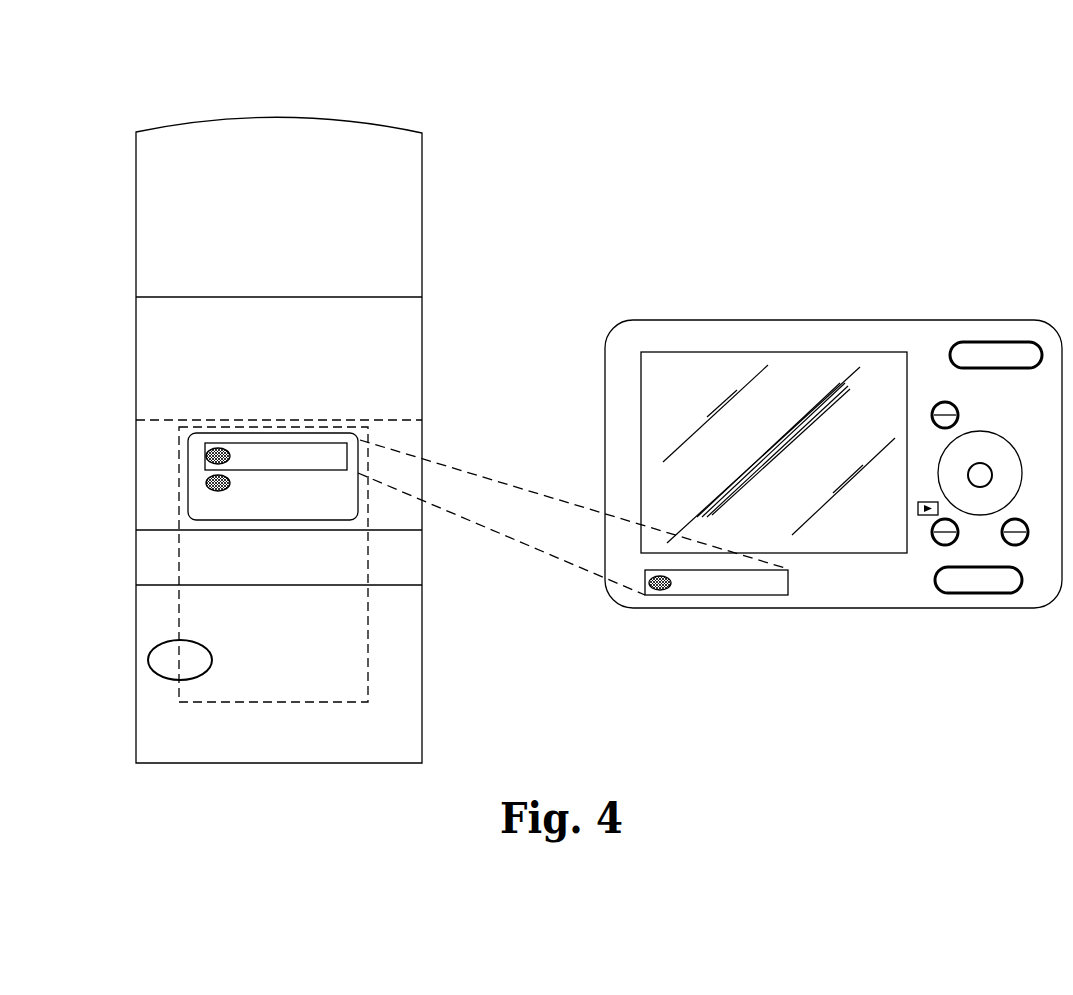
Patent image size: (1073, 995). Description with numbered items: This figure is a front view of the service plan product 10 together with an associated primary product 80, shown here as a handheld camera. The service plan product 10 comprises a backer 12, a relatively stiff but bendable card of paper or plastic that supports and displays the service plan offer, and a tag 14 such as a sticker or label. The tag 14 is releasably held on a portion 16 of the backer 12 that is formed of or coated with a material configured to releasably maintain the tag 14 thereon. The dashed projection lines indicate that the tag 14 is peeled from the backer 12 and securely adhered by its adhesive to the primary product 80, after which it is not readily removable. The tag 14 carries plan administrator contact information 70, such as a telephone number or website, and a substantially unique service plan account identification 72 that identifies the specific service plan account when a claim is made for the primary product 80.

The service plan product 10 is at (437, 111).
The backer 12 is at (426, 203).
The tag 14 is at (252, 450).
The portion of backer 16 is at (204, 477).
The plan administrator contact information 70 is at (788, 573).
The service plan account identification 72 is at (790, 577).
The primary product 80 is at (853, 335).